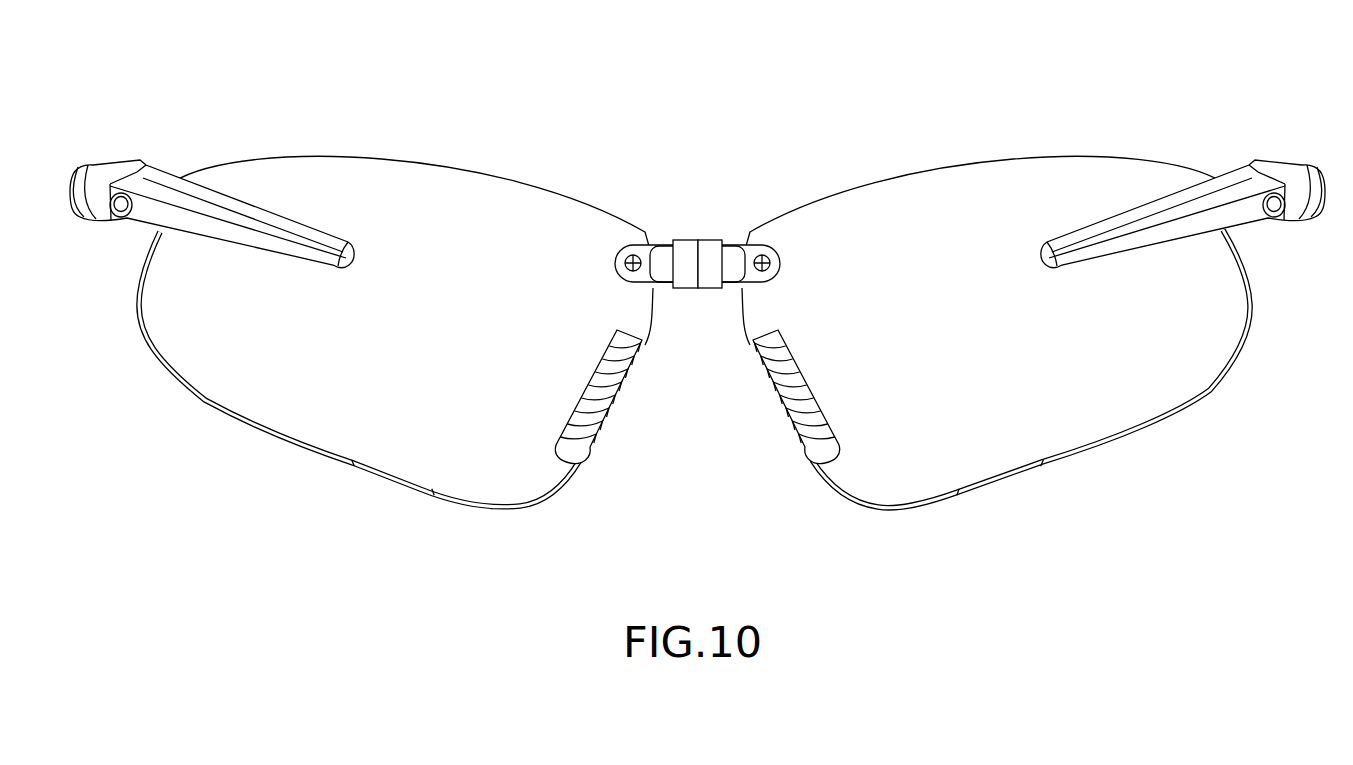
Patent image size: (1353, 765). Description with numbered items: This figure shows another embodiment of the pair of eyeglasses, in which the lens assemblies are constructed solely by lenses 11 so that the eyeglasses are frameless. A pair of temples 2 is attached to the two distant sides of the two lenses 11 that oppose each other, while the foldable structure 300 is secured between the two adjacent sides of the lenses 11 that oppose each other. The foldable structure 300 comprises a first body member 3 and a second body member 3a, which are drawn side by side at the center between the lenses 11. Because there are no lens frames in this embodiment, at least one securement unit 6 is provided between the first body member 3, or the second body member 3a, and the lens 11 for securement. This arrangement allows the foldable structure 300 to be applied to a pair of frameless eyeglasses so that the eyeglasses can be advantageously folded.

The temple 2 is at (253, 237).
The lens 11 is at (442, 203).
The securement unit 6 is at (613, 265).
The first body member 3 is at (726, 236).
The second body member 3a is at (667, 236).
The foldable structure 300 is at (755, 112).